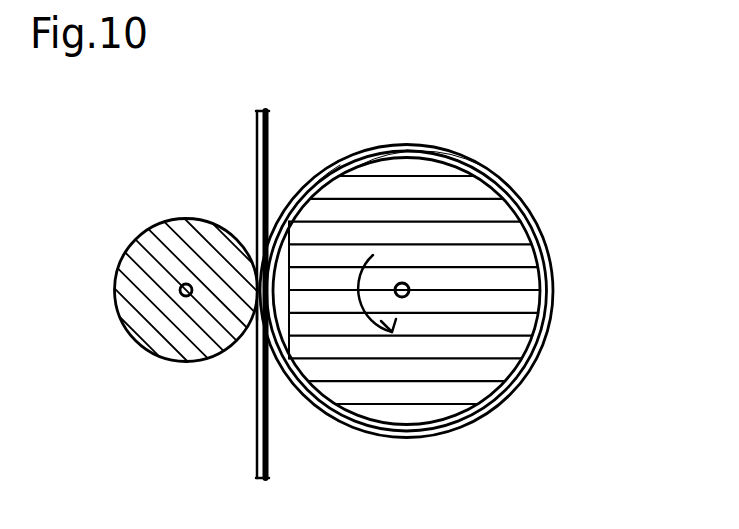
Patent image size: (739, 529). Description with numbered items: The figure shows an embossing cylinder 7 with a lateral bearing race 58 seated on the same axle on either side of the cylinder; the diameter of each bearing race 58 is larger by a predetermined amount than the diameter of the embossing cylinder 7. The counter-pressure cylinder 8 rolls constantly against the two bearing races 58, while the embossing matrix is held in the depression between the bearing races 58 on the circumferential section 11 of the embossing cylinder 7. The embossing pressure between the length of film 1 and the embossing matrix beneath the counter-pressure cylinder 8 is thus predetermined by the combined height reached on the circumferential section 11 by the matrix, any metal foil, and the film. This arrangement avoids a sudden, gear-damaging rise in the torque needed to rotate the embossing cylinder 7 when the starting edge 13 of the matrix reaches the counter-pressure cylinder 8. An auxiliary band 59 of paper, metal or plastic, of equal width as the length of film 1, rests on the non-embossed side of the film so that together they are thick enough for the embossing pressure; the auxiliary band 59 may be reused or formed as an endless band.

The length of film 1 is at (268, 442).
The auxiliary band 59 is at (257, 442).
The counter-pressure cylinder 8 is at (140, 260).
The embossing cylinder 7 is at (517, 267).
The circumferential section 11 is at (506, 203).
The starting edge 13 is at (312, 222).
The bearing race 58 is at (296, 185).